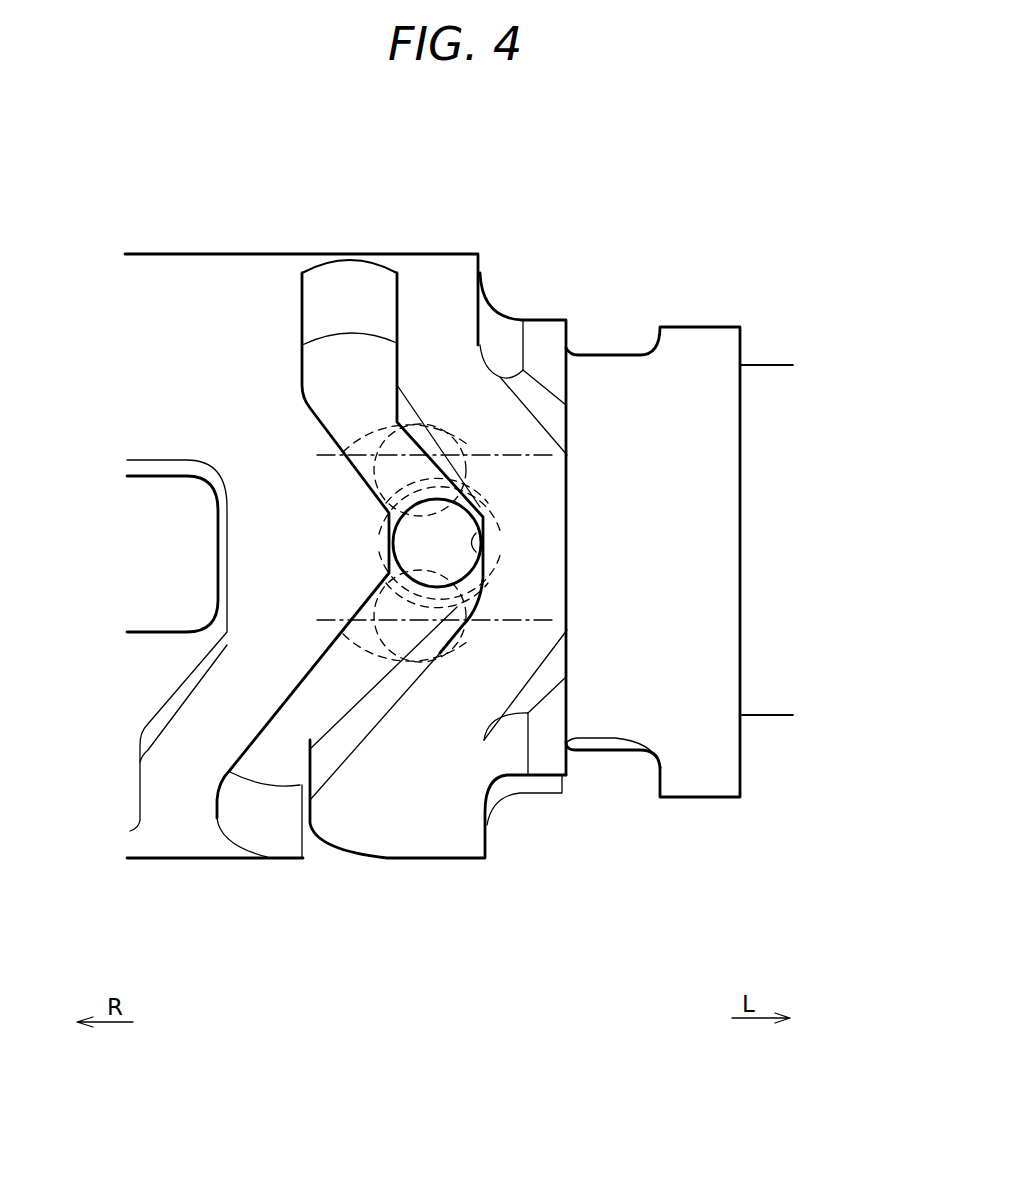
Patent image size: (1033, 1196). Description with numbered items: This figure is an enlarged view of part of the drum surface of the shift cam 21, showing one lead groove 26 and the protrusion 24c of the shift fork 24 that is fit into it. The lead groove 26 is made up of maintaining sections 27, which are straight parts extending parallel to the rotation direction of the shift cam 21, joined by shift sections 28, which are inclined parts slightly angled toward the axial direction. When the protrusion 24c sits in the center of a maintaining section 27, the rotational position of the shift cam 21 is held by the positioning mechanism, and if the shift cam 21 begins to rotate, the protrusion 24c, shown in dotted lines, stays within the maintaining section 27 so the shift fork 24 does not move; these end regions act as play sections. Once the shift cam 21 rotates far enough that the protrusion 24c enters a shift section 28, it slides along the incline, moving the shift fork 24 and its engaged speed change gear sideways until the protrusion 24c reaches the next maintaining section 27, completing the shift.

The shift cam 21 is at (216, 247).
The lead groove 26 is at (345, 305).
The maintaining section 27 is at (481, 552).
The shift section 28 is at (437, 441).
The shift fork 24 is at (403, 545).
The protrusion 24c is at (342, 444).